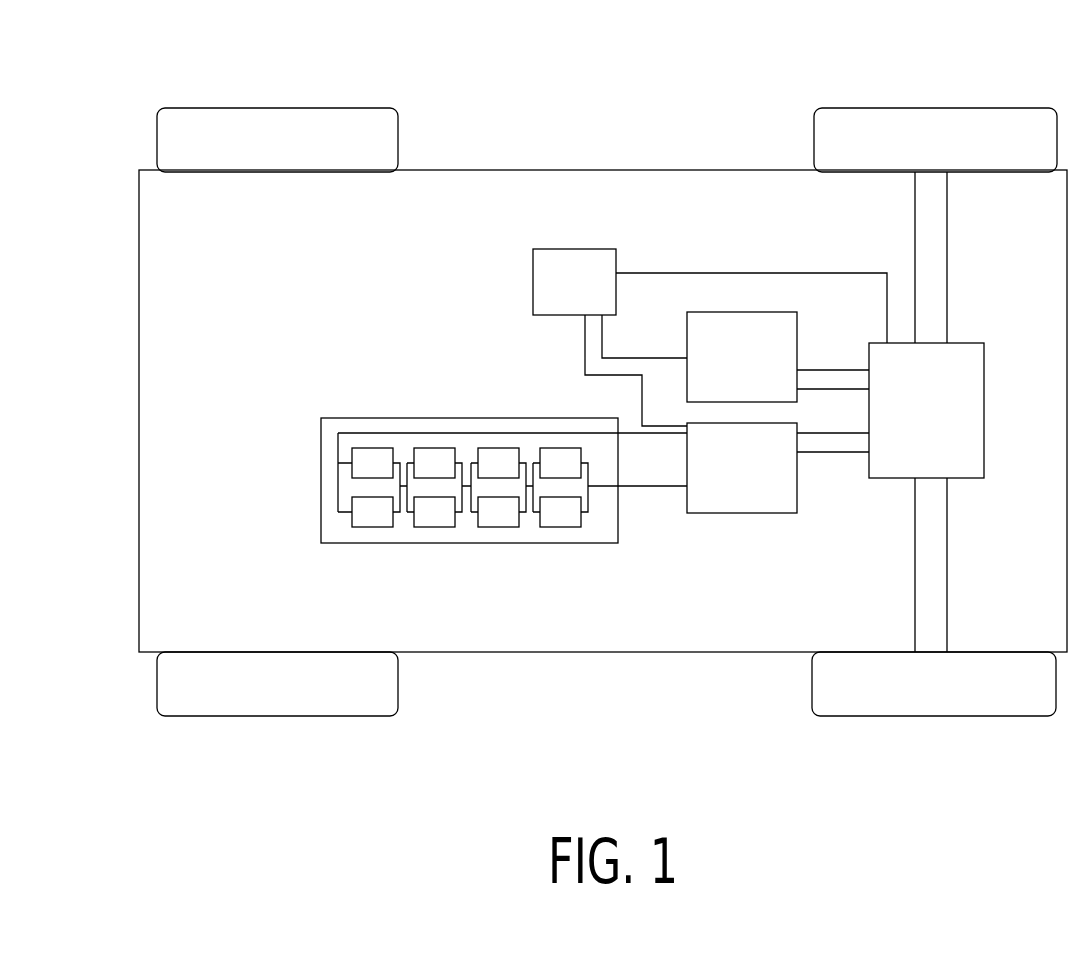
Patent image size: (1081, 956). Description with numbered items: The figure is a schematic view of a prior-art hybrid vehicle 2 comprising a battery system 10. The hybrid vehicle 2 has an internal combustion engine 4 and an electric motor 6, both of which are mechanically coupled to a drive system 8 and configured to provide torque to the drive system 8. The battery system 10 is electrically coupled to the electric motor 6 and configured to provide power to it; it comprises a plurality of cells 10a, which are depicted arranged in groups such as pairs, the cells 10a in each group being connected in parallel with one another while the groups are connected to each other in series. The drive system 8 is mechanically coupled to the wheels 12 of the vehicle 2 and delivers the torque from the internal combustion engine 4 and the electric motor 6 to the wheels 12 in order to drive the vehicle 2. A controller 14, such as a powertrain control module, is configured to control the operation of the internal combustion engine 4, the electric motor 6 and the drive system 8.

The hybrid vehicle 2 is at (287, 58).
The internal combustion engine 4 is at (733, 378).
The electric motor 6 is at (733, 488).
The drive system 8 is at (917, 418).
The battery system 10 is at (299, 390).
The cells 10a is at (435, 448).
The wheels 12 is at (919, 153).
The controller 14 is at (555, 293).